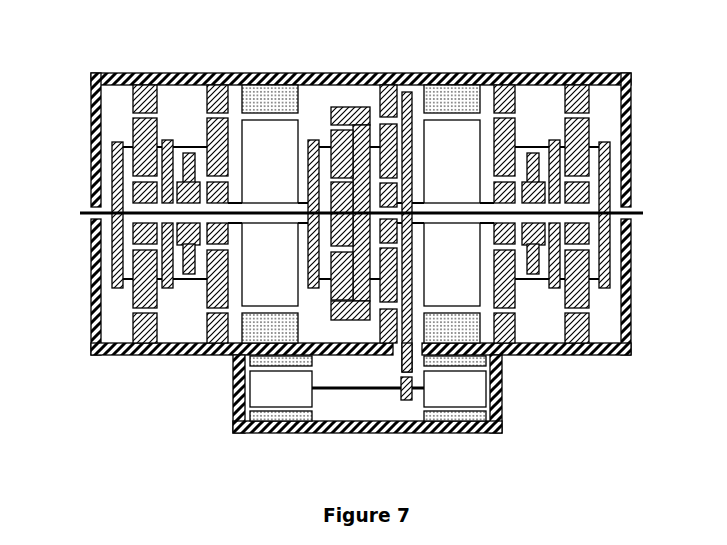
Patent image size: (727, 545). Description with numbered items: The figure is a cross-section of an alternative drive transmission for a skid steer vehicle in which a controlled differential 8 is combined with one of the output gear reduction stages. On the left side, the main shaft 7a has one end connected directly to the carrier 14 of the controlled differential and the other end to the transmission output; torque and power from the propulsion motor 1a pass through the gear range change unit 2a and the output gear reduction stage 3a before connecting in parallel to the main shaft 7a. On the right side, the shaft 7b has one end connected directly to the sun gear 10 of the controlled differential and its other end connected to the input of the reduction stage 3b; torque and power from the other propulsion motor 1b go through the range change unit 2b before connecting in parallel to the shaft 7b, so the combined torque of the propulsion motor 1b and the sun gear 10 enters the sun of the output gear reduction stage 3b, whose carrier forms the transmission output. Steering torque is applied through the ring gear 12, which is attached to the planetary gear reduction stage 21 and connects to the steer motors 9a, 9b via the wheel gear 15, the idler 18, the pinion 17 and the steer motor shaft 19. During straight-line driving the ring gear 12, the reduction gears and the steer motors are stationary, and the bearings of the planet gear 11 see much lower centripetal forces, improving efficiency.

The controlled differential 8 is at (356, 97).
The propulsion motor 1a is at (272, 160).
The propulsion motor 1b is at (458, 152).
The gear range change unit 2a is at (168, 177).
The gear range change unit 2b is at (555, 172).
The output gear reduction stage 3a is at (118, 213).
The output gear reduction stage 3b is at (575, 214).
The main shaft 7a is at (227, 213).
The shaft 7b is at (473, 215).
The sun gear 10 is at (343, 280).
The planet gear 11 is at (343, 212).
The ring gear 12 is at (345, 117).
The carrier 14 is at (313, 185).
The wheel gear 15 is at (410, 153).
The pinion 17 is at (407, 388).
The idler 18 is at (405, 360).
The steer motor shaft 19 is at (353, 388).
The planetary gear reduction stage 21 is at (388, 185).
The steer motor 9a is at (282, 393).
The steer motor 9b is at (455, 393).